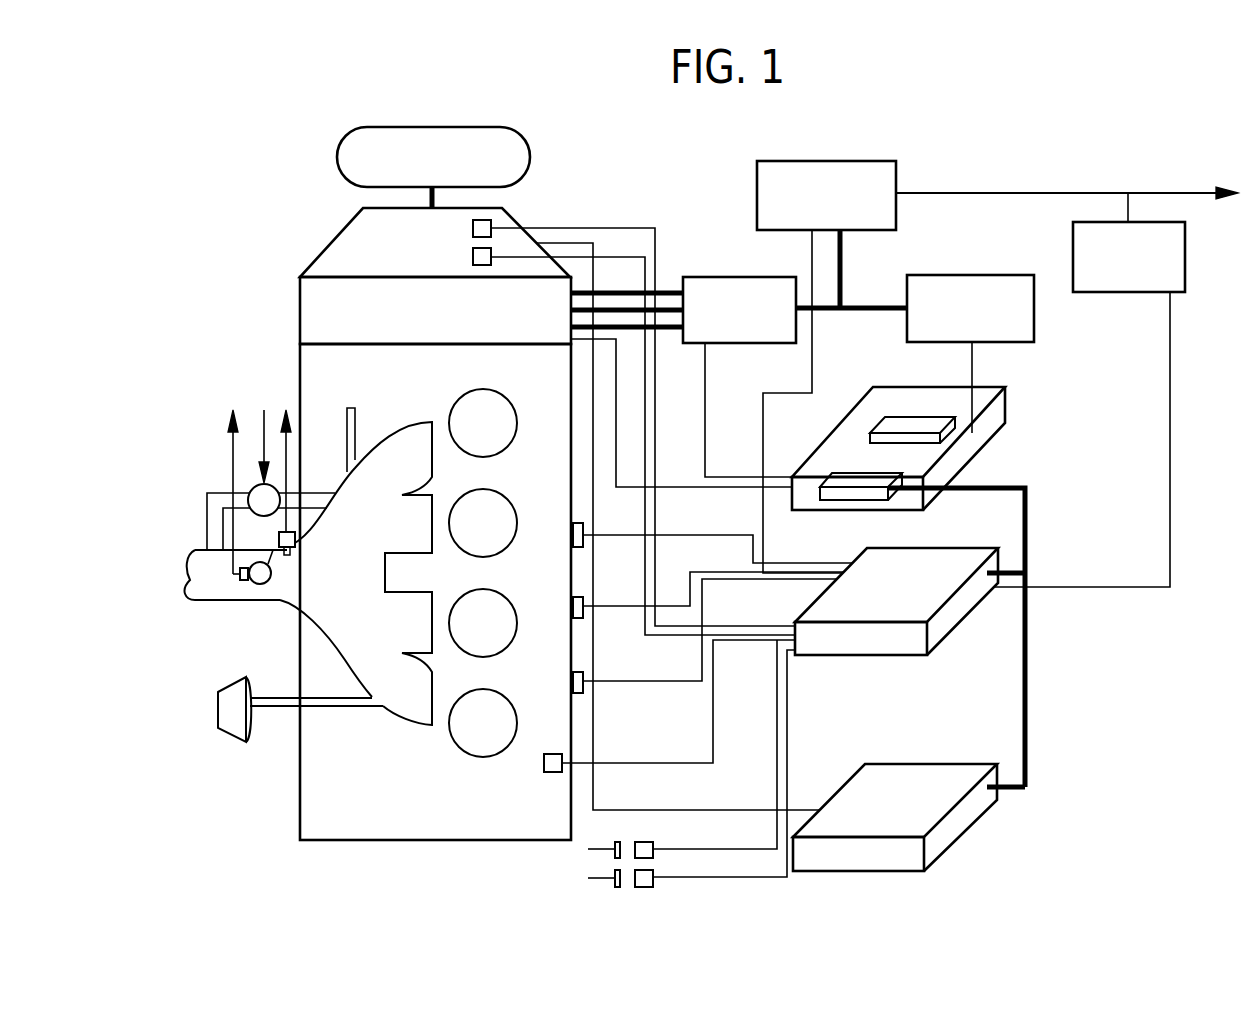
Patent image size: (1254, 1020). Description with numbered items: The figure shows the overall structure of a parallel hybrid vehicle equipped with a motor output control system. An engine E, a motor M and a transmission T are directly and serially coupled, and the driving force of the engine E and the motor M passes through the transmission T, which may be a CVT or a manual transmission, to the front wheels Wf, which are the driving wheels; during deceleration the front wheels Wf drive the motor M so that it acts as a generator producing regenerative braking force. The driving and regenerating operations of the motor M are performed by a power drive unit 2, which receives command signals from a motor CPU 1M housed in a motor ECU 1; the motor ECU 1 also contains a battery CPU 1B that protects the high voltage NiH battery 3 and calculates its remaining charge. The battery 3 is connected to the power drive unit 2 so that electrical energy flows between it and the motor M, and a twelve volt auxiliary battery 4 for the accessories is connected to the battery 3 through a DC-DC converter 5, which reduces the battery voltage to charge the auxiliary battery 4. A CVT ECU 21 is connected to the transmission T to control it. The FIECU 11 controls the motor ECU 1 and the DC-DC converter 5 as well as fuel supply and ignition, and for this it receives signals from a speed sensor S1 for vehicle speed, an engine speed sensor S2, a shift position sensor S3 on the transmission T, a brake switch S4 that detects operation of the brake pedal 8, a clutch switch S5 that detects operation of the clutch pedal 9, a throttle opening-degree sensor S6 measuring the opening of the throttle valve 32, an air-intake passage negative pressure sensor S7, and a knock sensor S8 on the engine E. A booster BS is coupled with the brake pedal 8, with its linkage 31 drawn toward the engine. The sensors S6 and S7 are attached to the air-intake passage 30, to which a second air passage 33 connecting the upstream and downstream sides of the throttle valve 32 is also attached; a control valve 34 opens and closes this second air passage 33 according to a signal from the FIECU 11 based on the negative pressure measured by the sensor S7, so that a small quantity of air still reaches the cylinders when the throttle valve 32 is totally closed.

The front wheels Wf is at (533, 160).
The transmission T is at (343, 243).
The motor M is at (312, 300).
The engine E is at (312, 363).
The speed sensor S1 is at (493, 224).
The engine speed sensor S2 is at (550, 754).
The shift position sensor S3 is at (482, 265).
The brake switch S4 is at (652, 842).
The clutch switch S5 is at (653, 872).
The throttle opening-degree sensor S6 is at (236, 582).
The air-intake passage negative pressure sensor S7 is at (279, 538).
The knock sensor S8 is at (583, 541).
The motor ECU 1 is at (931, 453).
The battery CPU 1B is at (937, 423).
The motor CPU 1M is at (885, 484).
The power drive unit 2 is at (740, 277).
The NiH battery 3 is at (975, 275).
The auxiliary battery 4 is at (1185, 255).
The DC-DC converter 5 is at (896, 180).
The brake pedal 8 is at (617, 841).
The clutch pedal 9 is at (613, 869).
The FIECU 11 is at (965, 603).
The CVT ECU 21 is at (968, 812).
The air-intake passage 30 is at (255, 588).
The brake pedal linkage 31 is at (292, 696).
The throttle valve 32 is at (272, 585).
The second air passage 33 is at (207, 503).
The control valve 34 is at (256, 483).
The booster BS is at (218, 710).